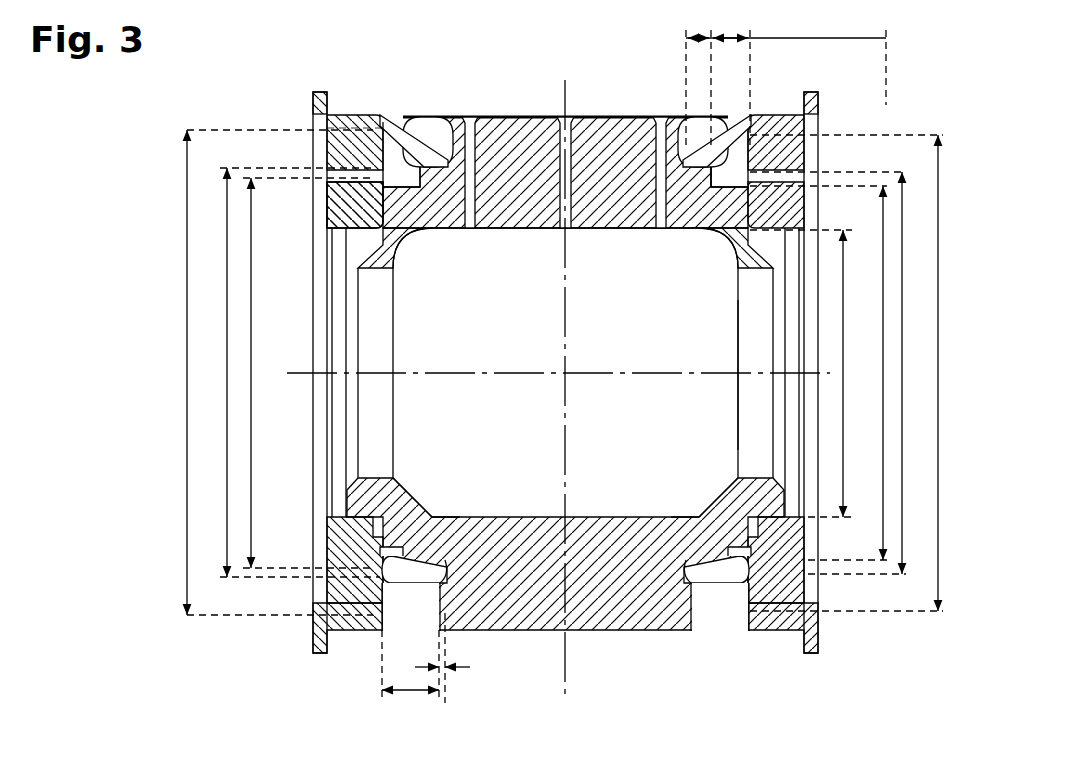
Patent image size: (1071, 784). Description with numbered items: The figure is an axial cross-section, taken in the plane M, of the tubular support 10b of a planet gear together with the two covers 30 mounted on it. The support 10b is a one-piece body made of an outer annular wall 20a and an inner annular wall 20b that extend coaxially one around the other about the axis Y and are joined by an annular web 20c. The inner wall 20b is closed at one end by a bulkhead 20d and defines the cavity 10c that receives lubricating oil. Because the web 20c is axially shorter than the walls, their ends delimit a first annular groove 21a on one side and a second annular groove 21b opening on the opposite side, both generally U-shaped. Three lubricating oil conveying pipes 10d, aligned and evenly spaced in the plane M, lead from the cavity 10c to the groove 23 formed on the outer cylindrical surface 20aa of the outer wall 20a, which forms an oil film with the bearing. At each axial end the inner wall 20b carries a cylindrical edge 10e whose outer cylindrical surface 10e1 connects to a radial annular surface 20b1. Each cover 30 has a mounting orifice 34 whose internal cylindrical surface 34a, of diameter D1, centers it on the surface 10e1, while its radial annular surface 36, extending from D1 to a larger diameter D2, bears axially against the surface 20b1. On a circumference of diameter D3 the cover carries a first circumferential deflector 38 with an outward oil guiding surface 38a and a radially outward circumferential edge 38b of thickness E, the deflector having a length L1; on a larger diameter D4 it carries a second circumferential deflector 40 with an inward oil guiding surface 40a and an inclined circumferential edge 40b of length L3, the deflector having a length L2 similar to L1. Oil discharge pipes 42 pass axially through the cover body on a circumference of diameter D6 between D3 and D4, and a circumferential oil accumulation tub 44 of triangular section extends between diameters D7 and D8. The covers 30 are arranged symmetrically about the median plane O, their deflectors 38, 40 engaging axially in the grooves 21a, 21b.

The tubular support 10b is at (724, 106).
The cavity 10c is at (558, 358).
The lubricating oil conveying pipes 10d is at (480, 155).
The cylindrical edge 10e is at (360, 245).
The outer cylindrical surface 10e1 is at (327, 527).
The outer annular wall 20a is at (383, 118).
The outer cylindrical surface 20aa is at (622, 632).
The inner annular wall 20b is at (423, 240).
The radial annular surface 20b1 is at (408, 498).
The annular web 20c is at (511, 168).
The bulkhead 20d is at (738, 412).
The first annular groove 21a is at (432, 150).
The second annular groove 21b is at (706, 152).
The groove 23 is at (568, 112).
The cover 30 is at (308, 103).
The mounting orifice 34 is at (327, 182).
The internal cylindrical surface 34a is at (355, 205).
The radial annular surface 36 is at (395, 545).
The first circumferential deflector 38 is at (510, 615).
The circumferential oil guiding surface 38a is at (367, 620).
The circumferential edge 38b is at (512, 580).
The second circumferential deflector 40 is at (405, 137).
The circumferential oil guiding surface 40a is at (350, 115).
The circumferential edge 40b is at (448, 152).
The oil discharge pipes 42 is at (367, 130).
The circumferential oil accumulation tub 44 is at (365, 603).
The diameter D1 is at (843, 380).
The diameter D2 is at (883, 388).
The diameter D3 is at (902, 353).
The diameter D4 is at (938, 372).
The diameter D6 is at (251, 385).
The diameter D7 is at (227, 360).
The diameter D8 is at (187, 355).
The length L1 is at (410, 679).
The length L2 is at (727, 74).
The length L3 is at (765, 76).
The thickness E is at (450, 658).
The plane M is at (886, 38).
The median plane O is at (557, 645).
The axis Y is at (300, 375).